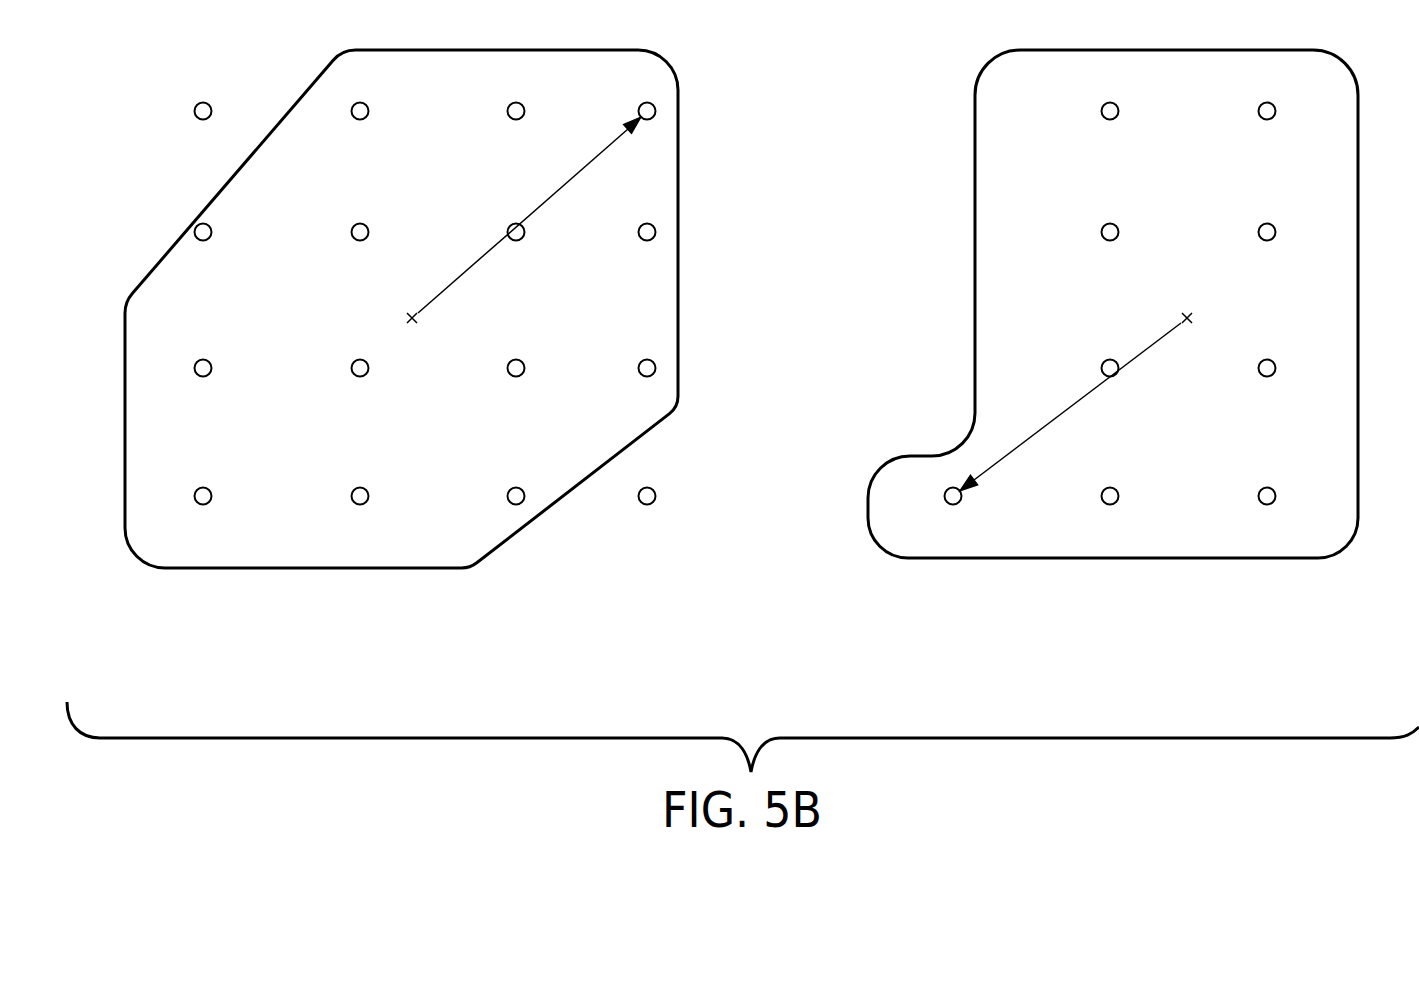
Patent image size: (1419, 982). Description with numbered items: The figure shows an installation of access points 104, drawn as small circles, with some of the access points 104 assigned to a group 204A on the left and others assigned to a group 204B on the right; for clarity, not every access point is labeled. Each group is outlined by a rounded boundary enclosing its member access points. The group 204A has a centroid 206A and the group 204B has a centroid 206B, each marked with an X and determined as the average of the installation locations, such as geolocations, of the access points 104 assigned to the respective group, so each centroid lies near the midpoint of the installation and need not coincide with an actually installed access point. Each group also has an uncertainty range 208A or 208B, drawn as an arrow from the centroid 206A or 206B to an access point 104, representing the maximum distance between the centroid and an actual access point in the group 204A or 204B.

The access point 104 is at (202, 241).
The group 204A is at (347, 568).
The group 204B is at (1180, 558).
The centroid 206A is at (408, 316).
The centroid 206B is at (1192, 319).
The uncertainty range 208A is at (537, 213).
The uncertainty range 208B is at (1067, 415).